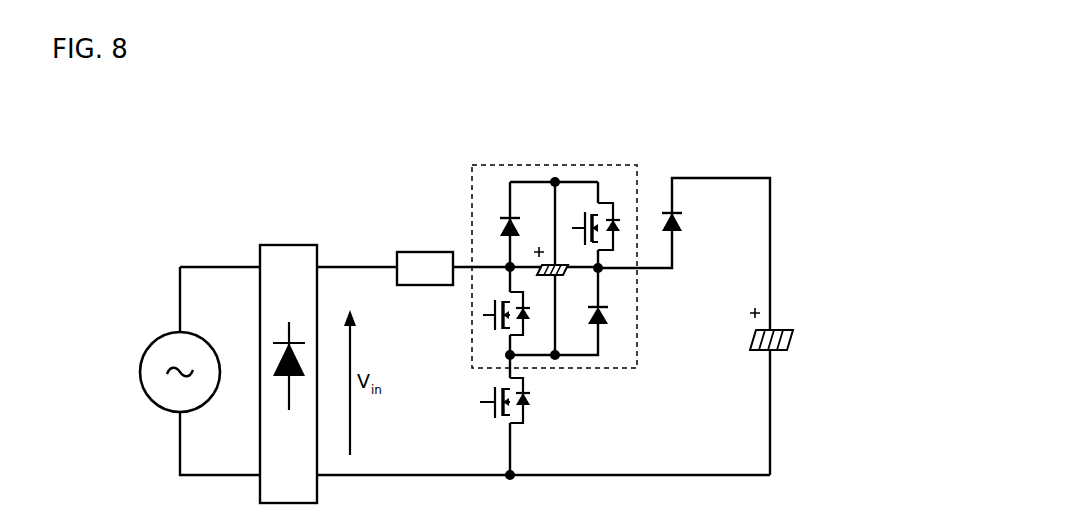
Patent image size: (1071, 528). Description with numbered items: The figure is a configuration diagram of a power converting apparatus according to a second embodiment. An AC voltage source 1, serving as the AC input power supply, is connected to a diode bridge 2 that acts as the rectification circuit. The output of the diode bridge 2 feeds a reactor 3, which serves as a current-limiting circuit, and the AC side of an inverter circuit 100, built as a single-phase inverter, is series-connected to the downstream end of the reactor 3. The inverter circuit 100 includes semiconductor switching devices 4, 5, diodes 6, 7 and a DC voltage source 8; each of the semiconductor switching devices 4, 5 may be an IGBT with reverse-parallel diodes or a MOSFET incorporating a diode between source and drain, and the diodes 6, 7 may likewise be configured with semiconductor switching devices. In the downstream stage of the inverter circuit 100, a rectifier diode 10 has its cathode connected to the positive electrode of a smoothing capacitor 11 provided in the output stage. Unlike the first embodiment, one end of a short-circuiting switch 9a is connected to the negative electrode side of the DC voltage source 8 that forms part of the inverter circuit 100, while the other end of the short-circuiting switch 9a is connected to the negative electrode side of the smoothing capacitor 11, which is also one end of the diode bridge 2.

The AC voltage source 1 is at (136, 370).
The diode bridge 2 is at (258, 245).
The reactor 3 is at (395, 251).
The semiconductor switching device 4 is at (499, 334).
The semiconductor switching device 5 is at (609, 195).
The diode 6 is at (499, 228).
The diode 7 is at (612, 315).
The DC voltage source 8 is at (562, 285).
The short-circuiting switch 9a is at (492, 415).
The rectifier diode 10 is at (680, 228).
The smoothing capacitor 11 is at (780, 322).
The inverter circuit 100 is at (472, 165).